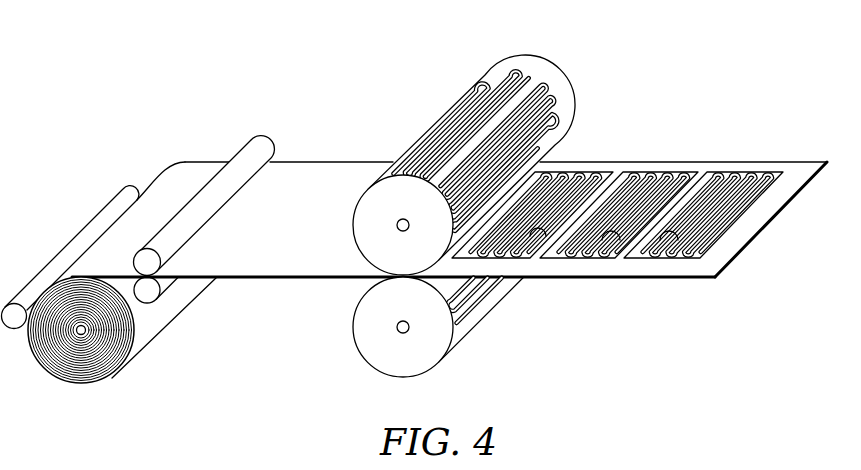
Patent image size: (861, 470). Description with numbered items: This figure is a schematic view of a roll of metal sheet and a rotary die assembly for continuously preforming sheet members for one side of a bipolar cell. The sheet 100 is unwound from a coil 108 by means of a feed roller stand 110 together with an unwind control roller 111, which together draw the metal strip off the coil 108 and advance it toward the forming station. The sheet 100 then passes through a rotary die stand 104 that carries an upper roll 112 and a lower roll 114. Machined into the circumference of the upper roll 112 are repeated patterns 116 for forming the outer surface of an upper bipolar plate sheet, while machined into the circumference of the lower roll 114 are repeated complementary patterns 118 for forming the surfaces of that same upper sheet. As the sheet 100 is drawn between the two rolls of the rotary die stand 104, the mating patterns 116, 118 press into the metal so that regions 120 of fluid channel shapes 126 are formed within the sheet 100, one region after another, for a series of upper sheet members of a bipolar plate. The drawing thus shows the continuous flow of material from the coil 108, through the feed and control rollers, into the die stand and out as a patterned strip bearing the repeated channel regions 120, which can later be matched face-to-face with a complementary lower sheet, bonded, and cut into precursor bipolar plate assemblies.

The sheet 100 is at (267, 278).
The rotary die stand 104 is at (554, 80).
The coil 108 is at (110, 360).
The feed roller stand 110 is at (255, 148).
The unwind control roller 111 is at (82, 242).
The upper roll 112 is at (422, 260).
The lower roll 114 is at (420, 360).
The repeated patterns 116 is at (490, 88).
The repeated complementary patterns 118 is at (487, 290).
The regions 120 is at (585, 172).
The fluid channel shapes 126 is at (670, 229).